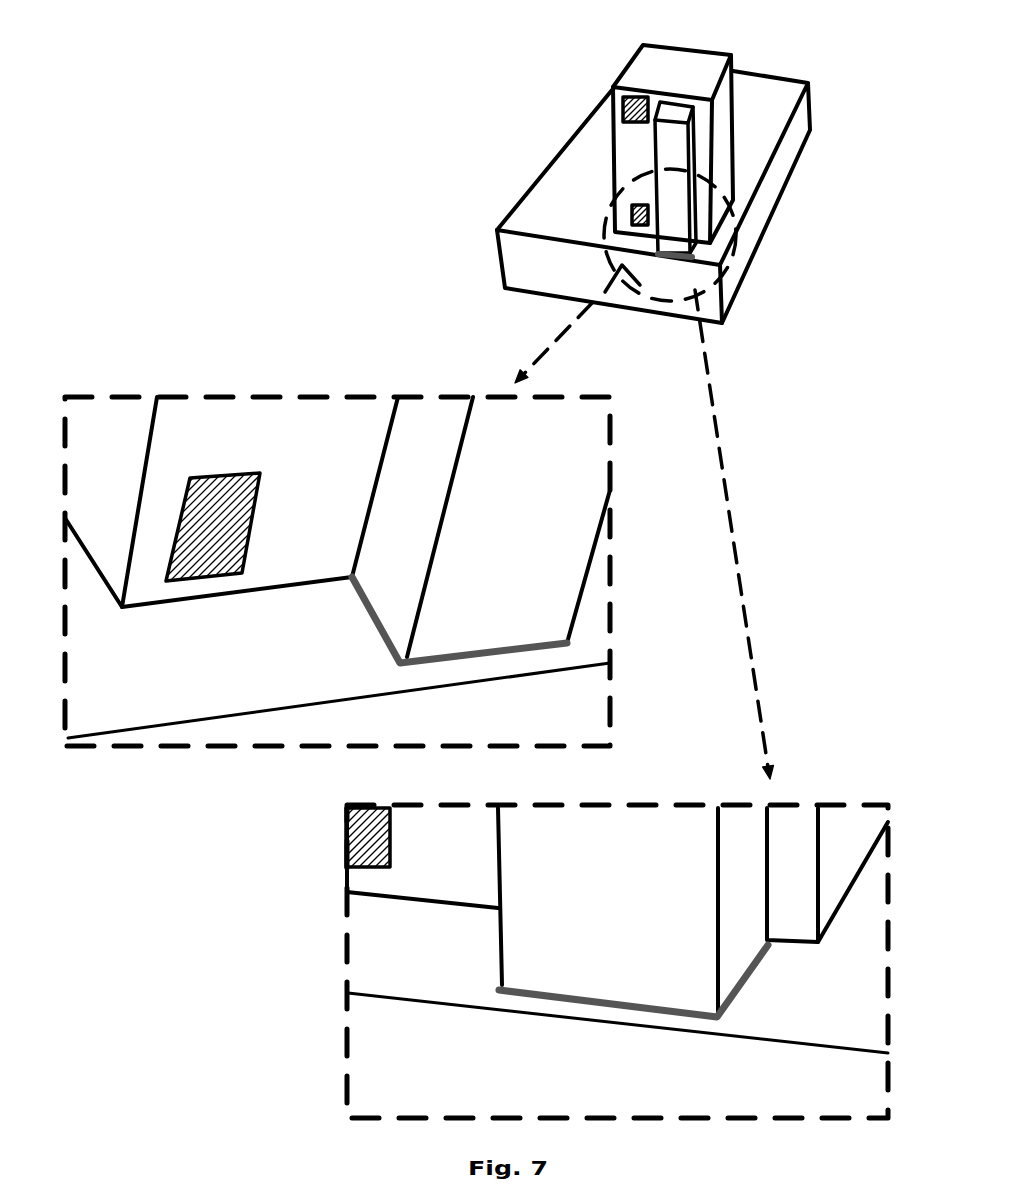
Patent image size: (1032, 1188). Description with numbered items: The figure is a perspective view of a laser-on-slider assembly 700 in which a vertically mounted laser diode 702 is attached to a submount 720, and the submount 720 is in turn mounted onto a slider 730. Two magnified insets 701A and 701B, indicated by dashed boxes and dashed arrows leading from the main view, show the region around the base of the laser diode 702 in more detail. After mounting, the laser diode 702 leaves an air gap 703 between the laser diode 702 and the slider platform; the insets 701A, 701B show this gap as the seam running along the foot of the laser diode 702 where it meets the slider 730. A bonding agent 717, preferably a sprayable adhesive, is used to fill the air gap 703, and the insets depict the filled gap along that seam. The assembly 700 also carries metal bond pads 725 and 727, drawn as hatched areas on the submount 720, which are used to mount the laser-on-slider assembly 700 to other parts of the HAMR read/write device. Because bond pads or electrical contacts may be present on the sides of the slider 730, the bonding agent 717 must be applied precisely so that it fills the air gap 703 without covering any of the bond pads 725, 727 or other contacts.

The laser-on-slider assembly 700 is at (520, 84).
The submount 720 is at (707, 70).
The slider 730 is at (780, 98).
The metal bond pad 727 is at (632, 110).
The metal bond pad 725 is at (632, 212).
The laser diode 702 is at (682, 230).
The bonding agent 717 is at (693, 250).
The air gap 703 is at (525, 638).
The magnified inset 701A is at (146, 330).
The magnified inset 701B is at (812, 775).